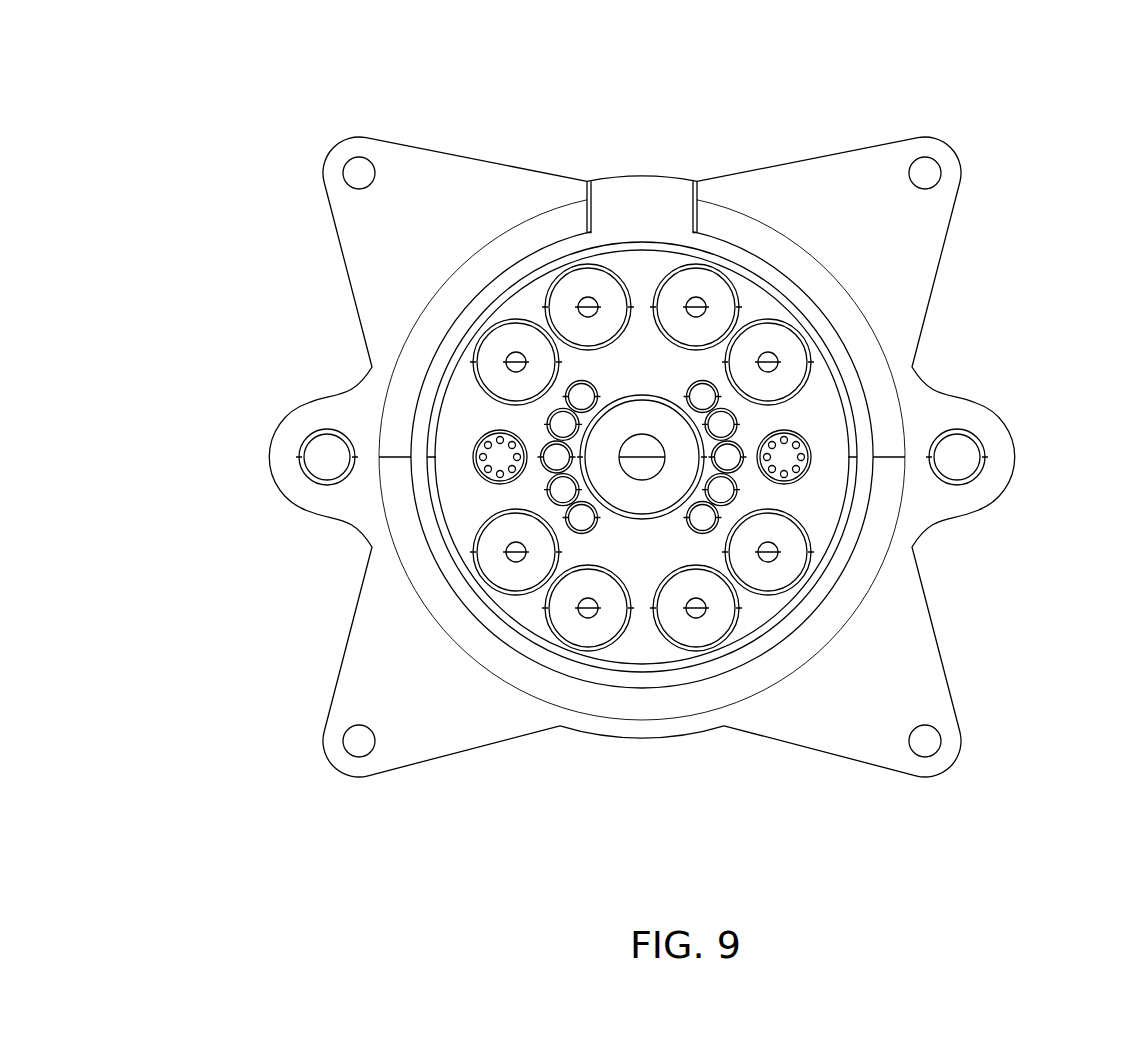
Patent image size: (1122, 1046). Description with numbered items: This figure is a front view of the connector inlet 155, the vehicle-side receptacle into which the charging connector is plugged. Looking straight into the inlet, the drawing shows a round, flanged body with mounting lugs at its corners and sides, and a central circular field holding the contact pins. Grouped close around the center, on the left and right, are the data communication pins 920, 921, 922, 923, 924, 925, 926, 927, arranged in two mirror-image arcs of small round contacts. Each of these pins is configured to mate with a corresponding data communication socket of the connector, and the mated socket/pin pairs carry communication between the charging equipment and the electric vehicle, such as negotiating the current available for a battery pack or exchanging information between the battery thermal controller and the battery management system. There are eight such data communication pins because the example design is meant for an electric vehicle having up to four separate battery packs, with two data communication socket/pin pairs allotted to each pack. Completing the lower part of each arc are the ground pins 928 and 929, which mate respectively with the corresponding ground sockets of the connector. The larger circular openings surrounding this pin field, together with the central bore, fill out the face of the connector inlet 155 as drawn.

The connector inlet 155 is at (230, 95).
The pin 920 is at (567, 390).
The pin 921 is at (548, 418).
The pin 922 is at (541, 453).
The pin 923 is at (547, 492).
The pin 924 is at (716, 388).
The pin 925 is at (735, 416).
The pin 926 is at (743, 455).
The pin 927 is at (736, 496).
The pin 928 is at (566, 522).
The pin 929 is at (716, 525).